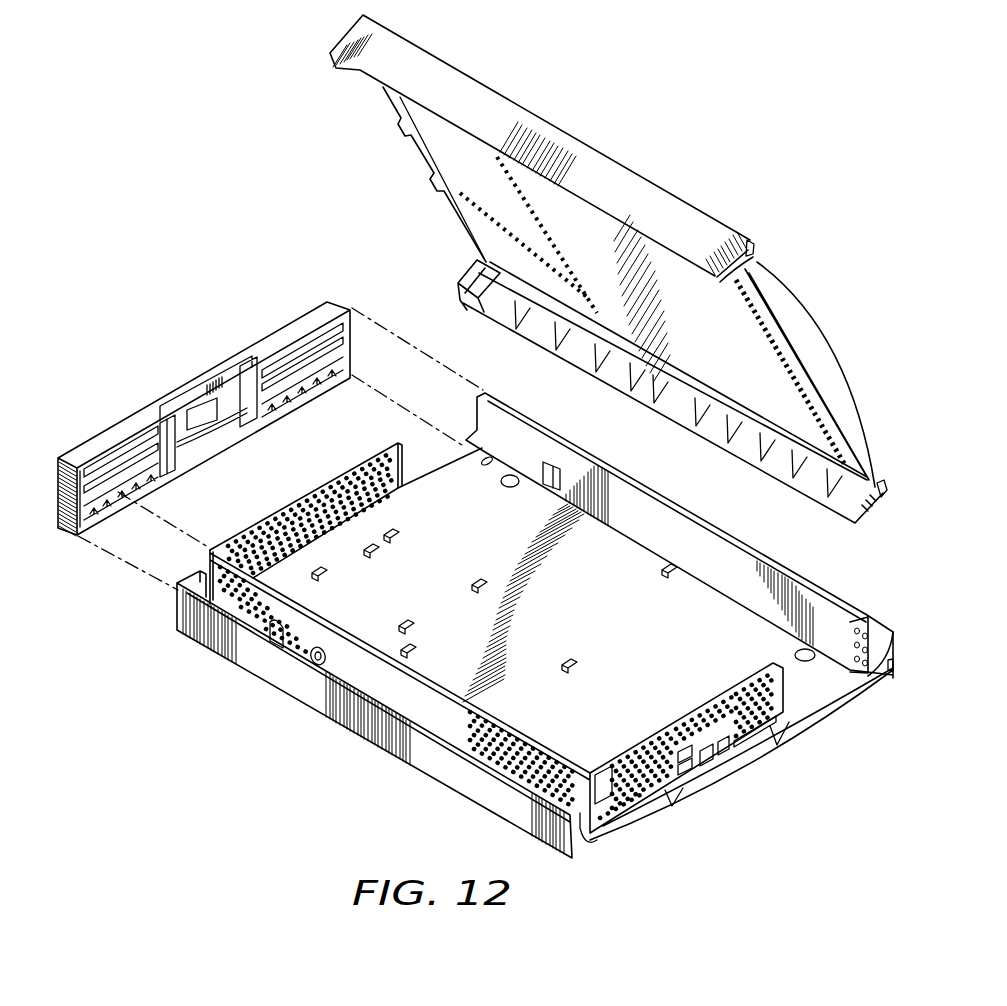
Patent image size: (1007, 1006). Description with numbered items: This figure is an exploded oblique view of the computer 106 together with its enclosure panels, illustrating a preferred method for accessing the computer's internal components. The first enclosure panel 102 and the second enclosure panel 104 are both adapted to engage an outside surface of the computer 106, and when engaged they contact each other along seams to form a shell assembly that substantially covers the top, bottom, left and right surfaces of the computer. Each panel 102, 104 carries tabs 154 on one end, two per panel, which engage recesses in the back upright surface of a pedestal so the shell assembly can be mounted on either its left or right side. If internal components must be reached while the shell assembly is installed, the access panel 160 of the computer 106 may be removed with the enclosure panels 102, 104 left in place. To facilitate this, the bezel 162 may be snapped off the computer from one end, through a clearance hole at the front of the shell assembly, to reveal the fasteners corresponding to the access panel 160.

The first enclosure panel 102 is at (505, 97).
The second enclosure panel 104 is at (373, 745).
The computer 106 is at (337, 472).
The tab 154 is at (890, 672).
The access panel 160 is at (480, 217).
The bezel 162 is at (132, 423).